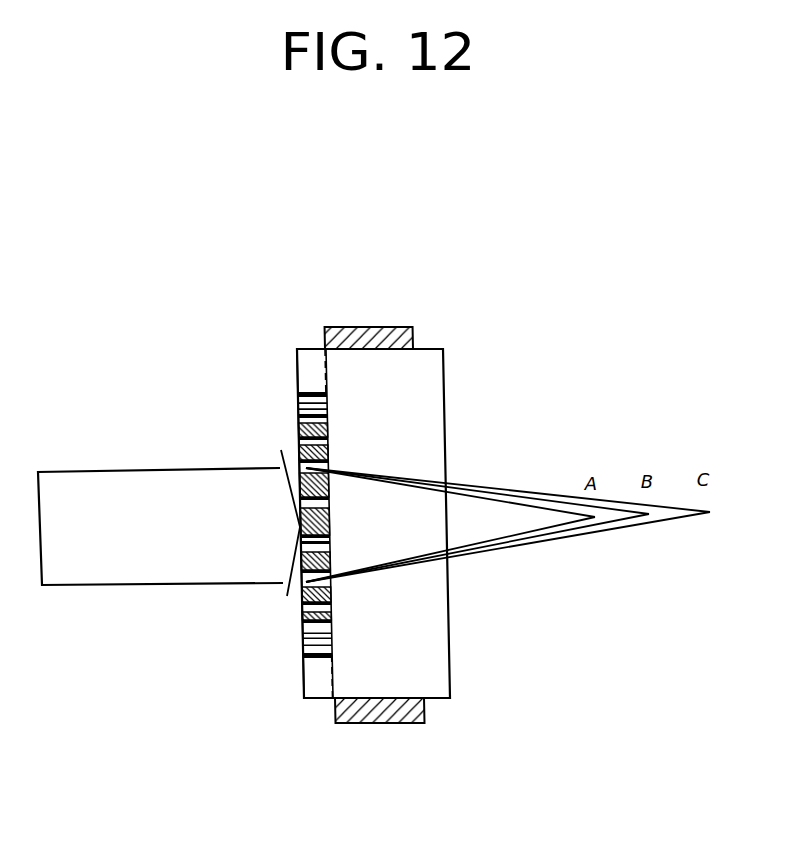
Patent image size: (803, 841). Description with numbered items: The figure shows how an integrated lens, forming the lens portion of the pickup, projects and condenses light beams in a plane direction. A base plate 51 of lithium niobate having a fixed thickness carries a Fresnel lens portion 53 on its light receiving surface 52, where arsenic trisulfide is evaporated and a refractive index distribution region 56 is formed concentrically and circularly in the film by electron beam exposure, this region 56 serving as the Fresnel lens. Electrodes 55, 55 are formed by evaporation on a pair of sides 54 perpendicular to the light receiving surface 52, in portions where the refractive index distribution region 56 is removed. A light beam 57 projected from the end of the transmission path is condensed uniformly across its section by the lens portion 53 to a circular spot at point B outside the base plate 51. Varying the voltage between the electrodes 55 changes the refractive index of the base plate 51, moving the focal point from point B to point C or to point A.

The base plate 51 is at (433, 672).
The light receiving surface 52 is at (305, 668).
The Fresnel lens portion 53 is at (288, 415).
The side 54 is at (310, 348).
The electrode 55 is at (389, 326).
The refractive index distribution region 56 is at (305, 611).
The light beam 57 is at (110, 470).